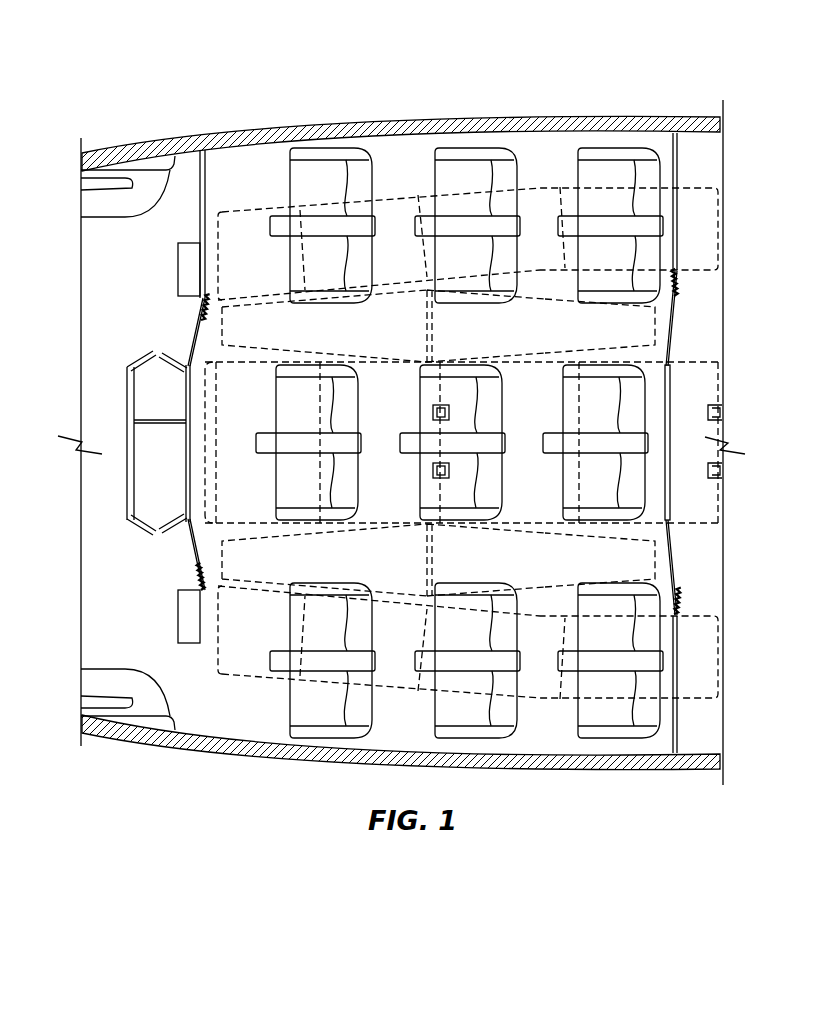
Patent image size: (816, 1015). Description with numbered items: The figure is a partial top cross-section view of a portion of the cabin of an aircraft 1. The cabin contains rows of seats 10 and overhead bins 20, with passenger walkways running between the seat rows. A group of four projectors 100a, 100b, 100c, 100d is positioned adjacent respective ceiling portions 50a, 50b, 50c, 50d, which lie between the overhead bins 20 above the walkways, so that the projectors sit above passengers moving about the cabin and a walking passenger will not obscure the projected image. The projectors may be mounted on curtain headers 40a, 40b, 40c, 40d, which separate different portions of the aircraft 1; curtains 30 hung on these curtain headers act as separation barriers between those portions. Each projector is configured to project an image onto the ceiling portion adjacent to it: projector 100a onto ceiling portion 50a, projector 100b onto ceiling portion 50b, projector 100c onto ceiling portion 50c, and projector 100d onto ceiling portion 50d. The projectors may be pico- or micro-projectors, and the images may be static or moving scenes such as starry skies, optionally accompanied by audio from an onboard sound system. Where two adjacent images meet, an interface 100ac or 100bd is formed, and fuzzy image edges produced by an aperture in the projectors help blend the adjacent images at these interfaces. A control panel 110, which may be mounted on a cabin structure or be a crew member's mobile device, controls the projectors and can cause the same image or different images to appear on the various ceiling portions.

The aircraft 1 is at (78, 66).
The seats 10 is at (290, 190).
The overhead bins 20 is at (550, 187).
The curtains 30 is at (196, 316).
The curtain header 40a is at (678, 300).
The curtain header 40b is at (675, 545).
The curtain header 40c is at (192, 346).
The curtain header 40d is at (190, 546).
The ceiling portion 50a is at (530, 364).
The ceiling portion 50b is at (540, 524).
The ceiling portion 50c is at (405, 292).
The ceiling portion 50d is at (403, 596).
The projector 100a is at (668, 322).
The interface 100ac is at (430, 320).
The projector 100b is at (668, 562).
The interface 100bd is at (433, 560).
The projector 100c is at (203, 325).
The projector 100d is at (202, 560).
The control panel 110 is at (178, 618).